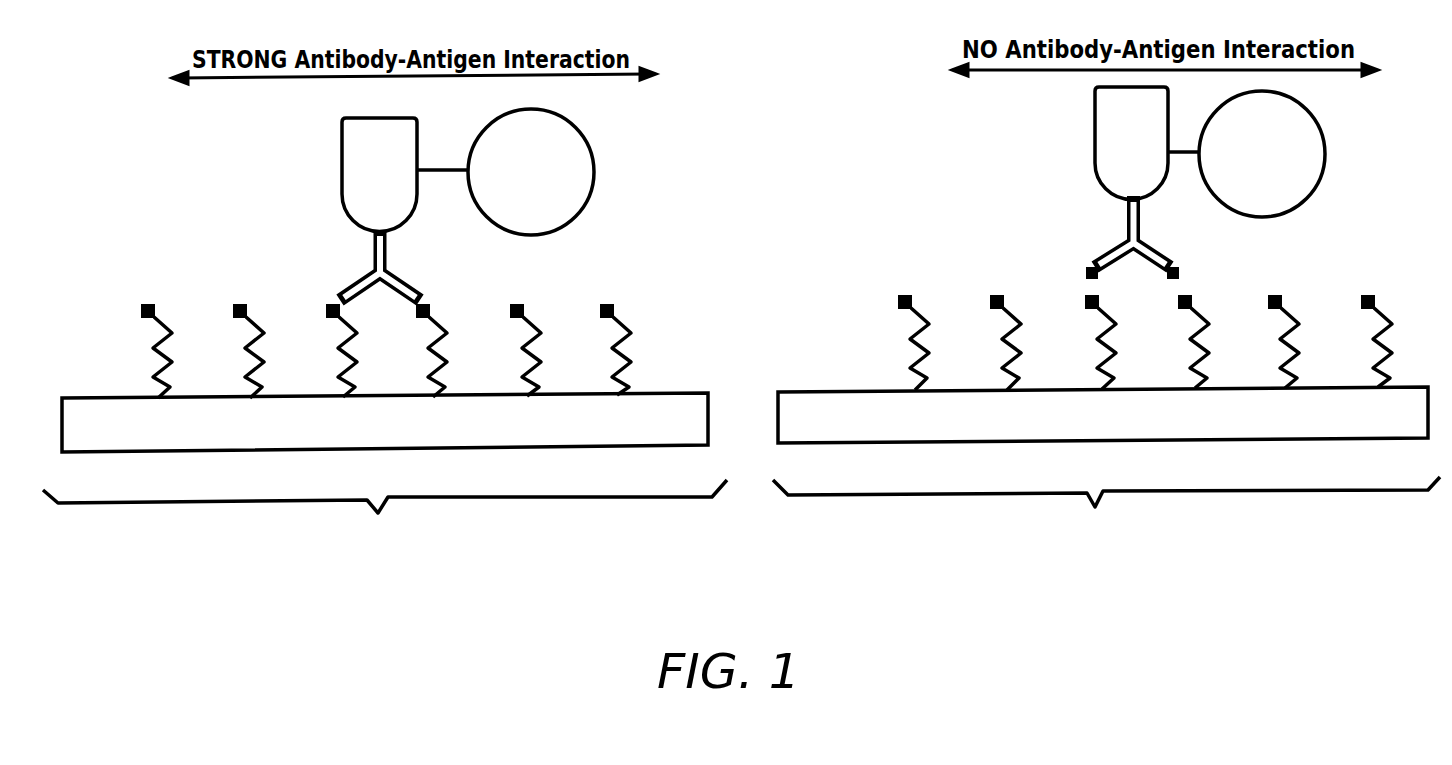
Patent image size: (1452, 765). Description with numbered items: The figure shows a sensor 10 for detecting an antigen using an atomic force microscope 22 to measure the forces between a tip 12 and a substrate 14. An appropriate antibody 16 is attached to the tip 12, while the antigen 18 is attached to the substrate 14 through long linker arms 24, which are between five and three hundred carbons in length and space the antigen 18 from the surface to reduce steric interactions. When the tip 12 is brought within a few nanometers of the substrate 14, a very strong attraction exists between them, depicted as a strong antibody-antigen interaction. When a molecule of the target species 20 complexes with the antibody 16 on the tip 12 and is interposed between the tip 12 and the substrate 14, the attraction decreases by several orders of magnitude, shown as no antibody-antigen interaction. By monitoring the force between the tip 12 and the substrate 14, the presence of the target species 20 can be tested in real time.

The sensor 10 is at (741, 518).
The tip 12 is at (390, 184).
The substrate 14 is at (401, 431).
The antibody 16 is at (372, 262).
The antigen 18 is at (612, 303).
The target species 20 is at (1086, 266).
The atomic force microscope 22 is at (552, 185).
The linker arms 24 is at (628, 350).